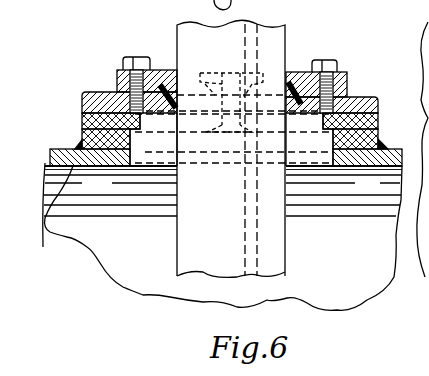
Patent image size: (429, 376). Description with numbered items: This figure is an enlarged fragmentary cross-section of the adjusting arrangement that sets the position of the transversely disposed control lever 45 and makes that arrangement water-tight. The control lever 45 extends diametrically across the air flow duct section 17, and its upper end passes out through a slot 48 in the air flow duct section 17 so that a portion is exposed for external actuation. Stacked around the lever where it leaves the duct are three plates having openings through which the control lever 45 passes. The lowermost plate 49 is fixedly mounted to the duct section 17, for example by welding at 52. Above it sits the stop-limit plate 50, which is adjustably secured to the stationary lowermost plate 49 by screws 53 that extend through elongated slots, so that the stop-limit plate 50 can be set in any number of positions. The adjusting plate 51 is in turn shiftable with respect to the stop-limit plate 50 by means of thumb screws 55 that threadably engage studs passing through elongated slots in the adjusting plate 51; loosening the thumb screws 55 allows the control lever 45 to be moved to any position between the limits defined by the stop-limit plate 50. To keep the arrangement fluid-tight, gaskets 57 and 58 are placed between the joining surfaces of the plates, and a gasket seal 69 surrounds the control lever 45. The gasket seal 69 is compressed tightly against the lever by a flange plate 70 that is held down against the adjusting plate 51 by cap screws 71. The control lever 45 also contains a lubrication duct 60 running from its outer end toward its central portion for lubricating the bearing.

The air flow duct section 17 is at (222, 236).
The control lever 45 is at (287, 33).
The slot 48 is at (143, 156).
The lowermost plate 49 is at (82, 135).
The stop-limit plate 50 is at (82, 118).
The adjusting plate 51 is at (97, 92).
The welding 52 is at (75, 147).
The screws 53 is at (223, 191).
The thumb screws 55 is at (210, 73).
The gasket 57 is at (380, 132).
The gasket 58 is at (380, 111).
The lubrication duct 60 is at (257, 228).
The gasket seal 69 is at (298, 72).
The flange plate 70 is at (163, 71).
The cap screws 71 is at (138, 56).